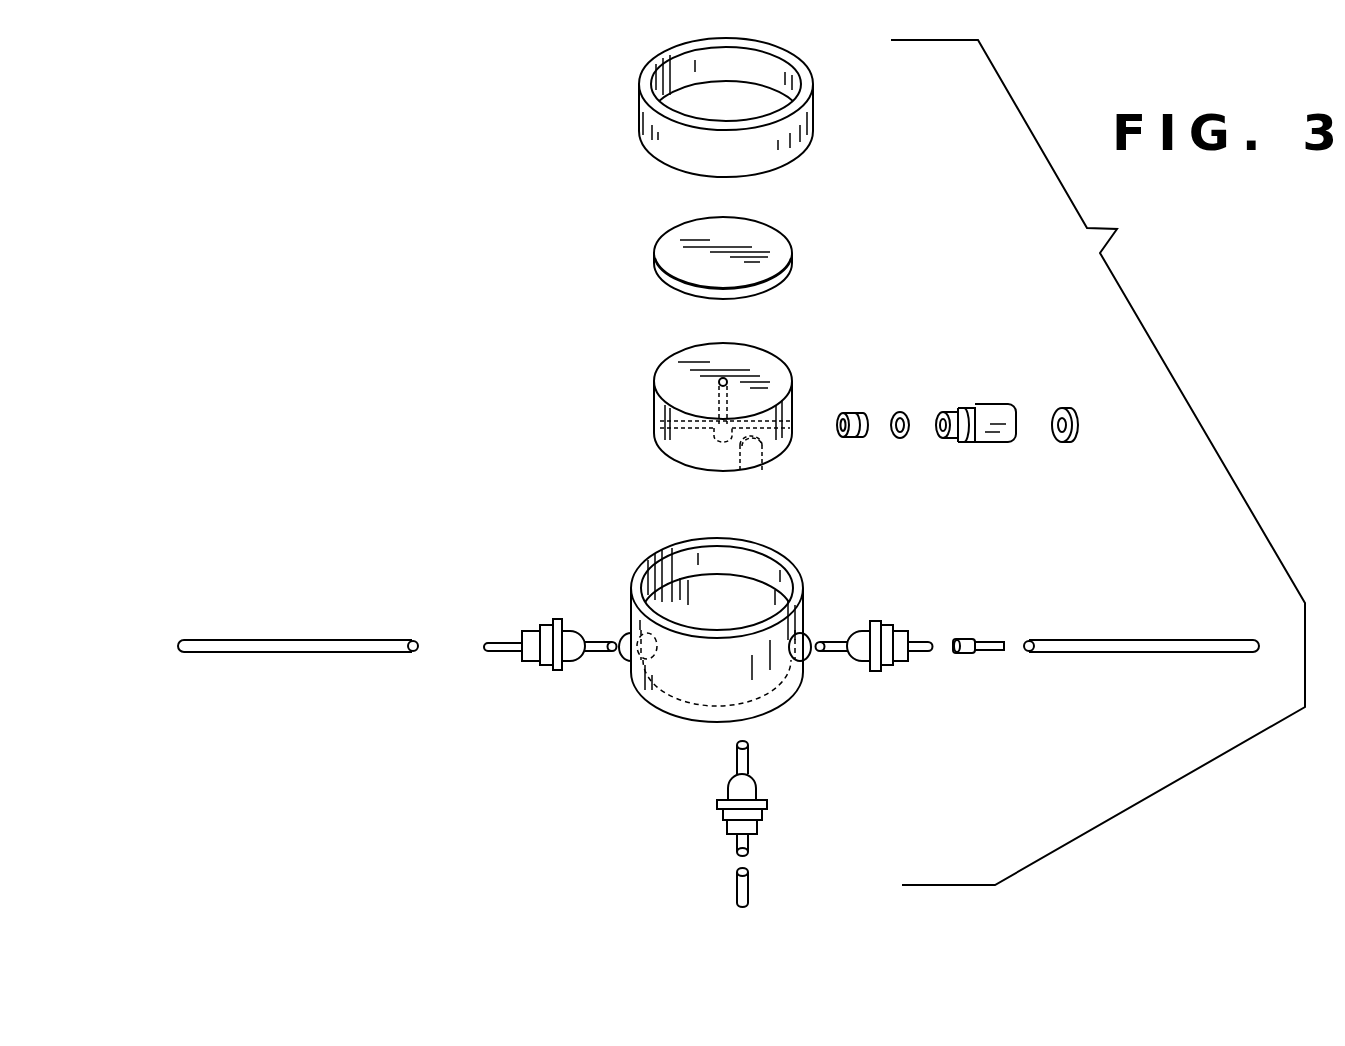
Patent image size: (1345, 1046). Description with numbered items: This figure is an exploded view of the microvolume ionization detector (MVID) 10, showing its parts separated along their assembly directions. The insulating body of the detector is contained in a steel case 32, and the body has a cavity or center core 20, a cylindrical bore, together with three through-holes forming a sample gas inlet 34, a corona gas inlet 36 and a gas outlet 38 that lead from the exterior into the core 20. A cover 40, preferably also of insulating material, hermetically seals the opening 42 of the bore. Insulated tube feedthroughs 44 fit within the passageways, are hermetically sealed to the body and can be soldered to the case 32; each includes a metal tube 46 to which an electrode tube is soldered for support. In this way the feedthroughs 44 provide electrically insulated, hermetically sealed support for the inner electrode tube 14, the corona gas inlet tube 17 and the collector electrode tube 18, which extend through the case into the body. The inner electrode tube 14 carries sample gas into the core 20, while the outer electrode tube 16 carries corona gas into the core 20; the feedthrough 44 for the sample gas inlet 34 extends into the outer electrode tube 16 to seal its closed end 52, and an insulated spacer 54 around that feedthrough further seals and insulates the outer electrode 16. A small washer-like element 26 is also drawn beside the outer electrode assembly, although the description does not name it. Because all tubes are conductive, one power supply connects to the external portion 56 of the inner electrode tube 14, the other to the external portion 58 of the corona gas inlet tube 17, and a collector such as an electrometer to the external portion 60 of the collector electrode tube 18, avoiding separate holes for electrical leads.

The microvolume ionization detector 10 is at (586, 571).
The inner electrode tube 14 is at (1170, 640).
The outer electrode tube 16 is at (1017, 396).
The corona gas inlet tube 17 is at (750, 882).
The collector electrode 18 is at (315, 640).
The center core 20 is at (705, 392).
The washer 26 is at (903, 440).
The steel case 32 is at (648, 568).
The sample gas inlet 34 is at (793, 430).
The corona gas inlet 36 is at (750, 470).
The gas outlet 38 is at (660, 420).
The cover 40 is at (670, 250).
The opening 42 is at (720, 378).
The insulated tube feedthrough 44 is at (572, 658).
The metal tube 46 is at (505, 652).
The closed end 52 is at (1020, 415).
The insulated spacer 54 is at (1082, 422).
The external portion of inner electrode tube 56 is at (1105, 655).
The external portion of corona gas inlet tube 58 is at (737, 895).
The external portion of collector electrode tube 60 is at (212, 652).